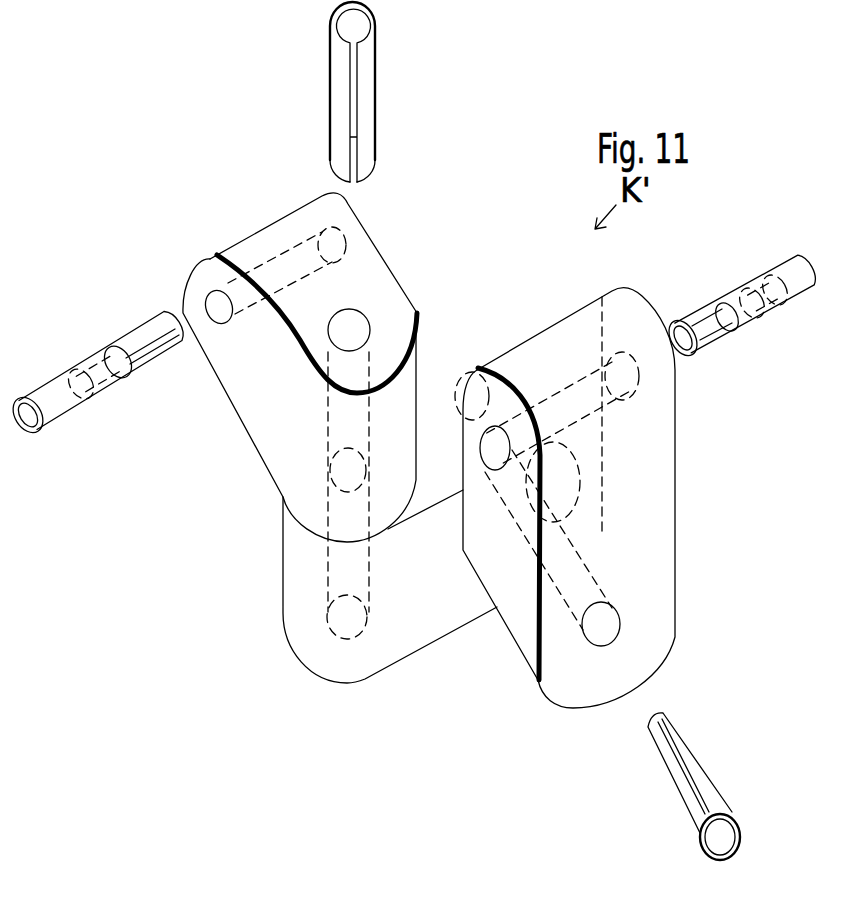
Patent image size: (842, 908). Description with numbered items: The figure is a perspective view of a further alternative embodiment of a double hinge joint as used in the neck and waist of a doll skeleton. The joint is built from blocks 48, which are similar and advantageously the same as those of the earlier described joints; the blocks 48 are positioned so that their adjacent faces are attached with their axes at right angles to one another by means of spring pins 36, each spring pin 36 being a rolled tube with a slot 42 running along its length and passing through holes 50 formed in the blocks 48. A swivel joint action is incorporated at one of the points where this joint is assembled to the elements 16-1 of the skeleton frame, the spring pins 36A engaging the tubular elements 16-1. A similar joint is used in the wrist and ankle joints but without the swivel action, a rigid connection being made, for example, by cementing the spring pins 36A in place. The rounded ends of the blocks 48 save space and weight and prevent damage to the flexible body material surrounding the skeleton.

The element of the skeleton frame 16-1 is at (52, 415).
The spring pin 36 is at (336, 121).
The spring pin 36A is at (135, 362).
The slot of roll pin 42 is at (346, 49).
The block 48 is at (274, 460).
The hole 50 is at (212, 302).